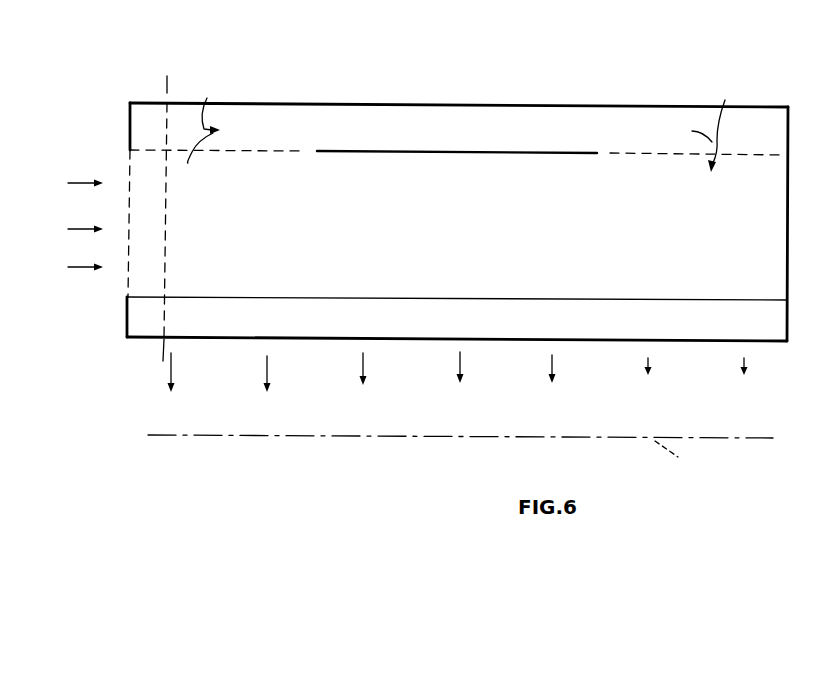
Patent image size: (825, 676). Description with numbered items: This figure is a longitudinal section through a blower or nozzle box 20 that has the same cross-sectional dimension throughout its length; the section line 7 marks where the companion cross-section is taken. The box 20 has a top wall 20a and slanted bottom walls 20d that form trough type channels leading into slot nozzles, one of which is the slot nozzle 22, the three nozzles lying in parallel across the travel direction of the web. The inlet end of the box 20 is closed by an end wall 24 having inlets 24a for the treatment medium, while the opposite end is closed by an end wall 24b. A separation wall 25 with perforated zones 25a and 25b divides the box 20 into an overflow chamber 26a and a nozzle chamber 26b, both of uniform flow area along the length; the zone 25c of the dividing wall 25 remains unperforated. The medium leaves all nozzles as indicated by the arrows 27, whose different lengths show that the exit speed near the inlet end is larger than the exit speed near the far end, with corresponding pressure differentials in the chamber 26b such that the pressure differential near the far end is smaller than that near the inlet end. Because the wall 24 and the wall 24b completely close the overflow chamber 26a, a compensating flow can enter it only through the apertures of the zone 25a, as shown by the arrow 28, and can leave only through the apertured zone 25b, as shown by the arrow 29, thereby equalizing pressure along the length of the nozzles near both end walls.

The section line 7- 7 is at (158, 82).
The nozzle box 20 is at (343, 69).
The top wall 20a is at (430, 105).
The slanted bottom walls 20d is at (742, 330).
The slot nozzle 22 is at (128, 340).
The end wall 24 is at (130, 148).
The inlets 24a is at (128, 218).
The end wall 24b is at (786, 238).
The separation wall 25 is at (440, 146).
The perforated zone 25a is at (246, 150).
The perforated zone 25b is at (647, 155).
The unperforated zone 25c is at (513, 154).
The overflow chamber 26a is at (386, 145).
The nozzle chamber 26b is at (368, 242).
The arrows 27 is at (362, 364).
The arrow 28 is at (204, 117).
The arrow 29 is at (711, 125).